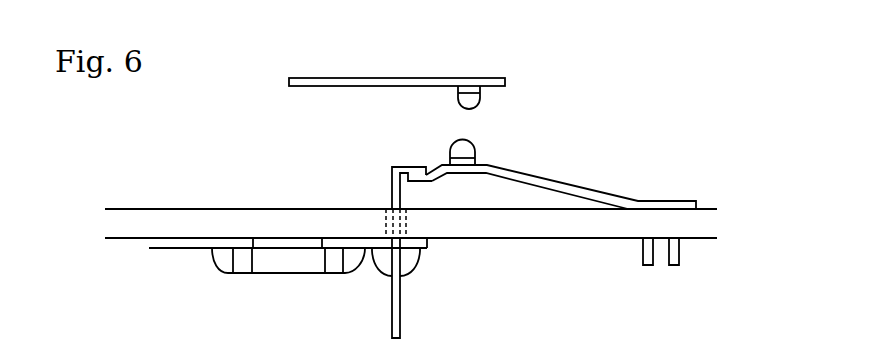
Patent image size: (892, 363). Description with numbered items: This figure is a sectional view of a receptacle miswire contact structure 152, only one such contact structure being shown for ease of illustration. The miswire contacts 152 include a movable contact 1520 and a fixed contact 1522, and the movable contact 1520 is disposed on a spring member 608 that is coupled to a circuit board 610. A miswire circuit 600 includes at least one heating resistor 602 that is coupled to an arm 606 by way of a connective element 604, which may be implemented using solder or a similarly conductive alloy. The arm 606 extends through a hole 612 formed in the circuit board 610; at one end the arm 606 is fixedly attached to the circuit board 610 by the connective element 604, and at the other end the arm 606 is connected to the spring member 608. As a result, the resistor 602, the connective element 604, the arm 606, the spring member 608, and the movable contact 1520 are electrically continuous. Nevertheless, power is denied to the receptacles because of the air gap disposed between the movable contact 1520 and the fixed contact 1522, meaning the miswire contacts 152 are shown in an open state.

The receptacle contact structure 152 is at (560, 68).
The fixed contact 1522 is at (458, 96).
The movable contact 1520 is at (475, 143).
The miswire circuit 600 is at (247, 305).
The heating resistor 602 is at (293, 275).
The connective element 604 is at (413, 259).
The arm 606 is at (391, 167).
The spring member 608 is at (543, 178).
The circuit board 610 is at (205, 208).
The hole 612 is at (389, 207).